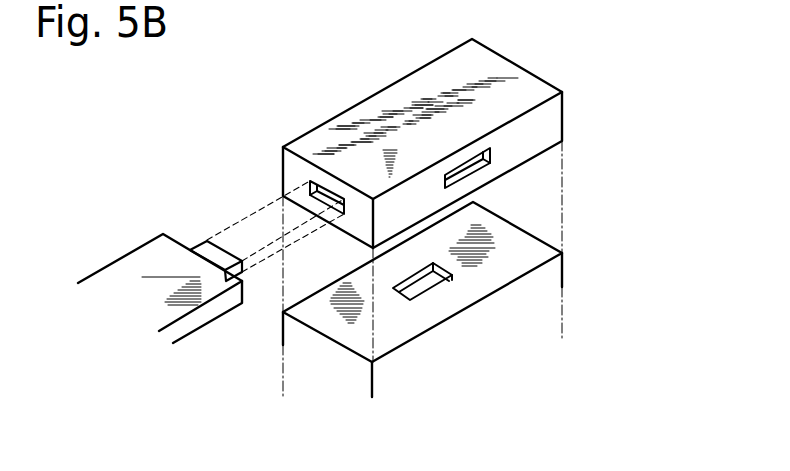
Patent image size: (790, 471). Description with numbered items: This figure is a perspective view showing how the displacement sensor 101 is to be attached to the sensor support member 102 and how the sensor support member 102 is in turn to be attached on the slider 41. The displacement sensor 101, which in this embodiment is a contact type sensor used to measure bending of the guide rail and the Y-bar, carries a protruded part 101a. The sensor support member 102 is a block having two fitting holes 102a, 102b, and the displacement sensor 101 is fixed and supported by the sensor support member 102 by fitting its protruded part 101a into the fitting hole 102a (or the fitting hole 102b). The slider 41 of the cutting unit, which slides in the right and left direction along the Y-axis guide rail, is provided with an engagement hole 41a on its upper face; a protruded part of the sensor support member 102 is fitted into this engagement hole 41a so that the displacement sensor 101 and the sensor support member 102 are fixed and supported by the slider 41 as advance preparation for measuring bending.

The sensor support member 102 is at (520, 80).
The fitting hole 102a is at (310, 184).
The fitting hole 102b is at (490, 153).
The displacement sensor 101 is at (173, 312).
The protruded part 101a is at (205, 248).
The slider 41 is at (550, 282).
The engagement hole 41a is at (438, 285).